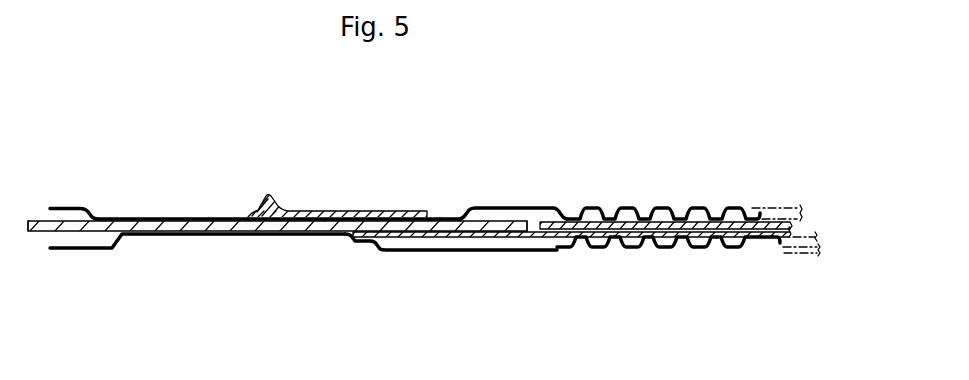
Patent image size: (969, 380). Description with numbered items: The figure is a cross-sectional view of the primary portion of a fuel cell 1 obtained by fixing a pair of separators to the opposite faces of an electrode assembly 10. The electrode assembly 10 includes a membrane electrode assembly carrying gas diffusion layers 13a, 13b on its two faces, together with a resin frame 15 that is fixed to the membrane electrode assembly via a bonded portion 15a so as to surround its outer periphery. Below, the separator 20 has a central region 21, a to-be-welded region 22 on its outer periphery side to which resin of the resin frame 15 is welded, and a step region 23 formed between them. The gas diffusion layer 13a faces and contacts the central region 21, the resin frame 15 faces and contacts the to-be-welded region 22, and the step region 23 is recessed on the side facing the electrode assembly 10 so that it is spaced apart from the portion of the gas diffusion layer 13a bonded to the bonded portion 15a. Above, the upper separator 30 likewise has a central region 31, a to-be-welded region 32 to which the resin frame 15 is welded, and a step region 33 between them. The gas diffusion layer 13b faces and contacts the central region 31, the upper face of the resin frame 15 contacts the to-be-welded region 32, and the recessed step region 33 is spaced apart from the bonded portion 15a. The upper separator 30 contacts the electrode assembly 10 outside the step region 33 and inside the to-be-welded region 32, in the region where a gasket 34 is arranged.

The fuel cell 1 is at (41, 119).
The electrode assembly 10 is at (77, 248).
The resin frame 15 is at (218, 228).
The bonded portion 15a is at (537, 221).
The separator 20 is at (298, 253).
The central region 21 is at (662, 247).
The to-be-welded region 22 is at (155, 235).
The step region 23 is at (450, 251).
The gas diffusion layer 13a is at (550, 240).
The gas diffusion layer 13b is at (623, 221).
The upper separator 30 is at (402, 196).
The central region 31 is at (660, 210).
The to-be-welded region 32 is at (153, 219).
The step region 33 is at (495, 208).
The gasket 34 is at (318, 211).